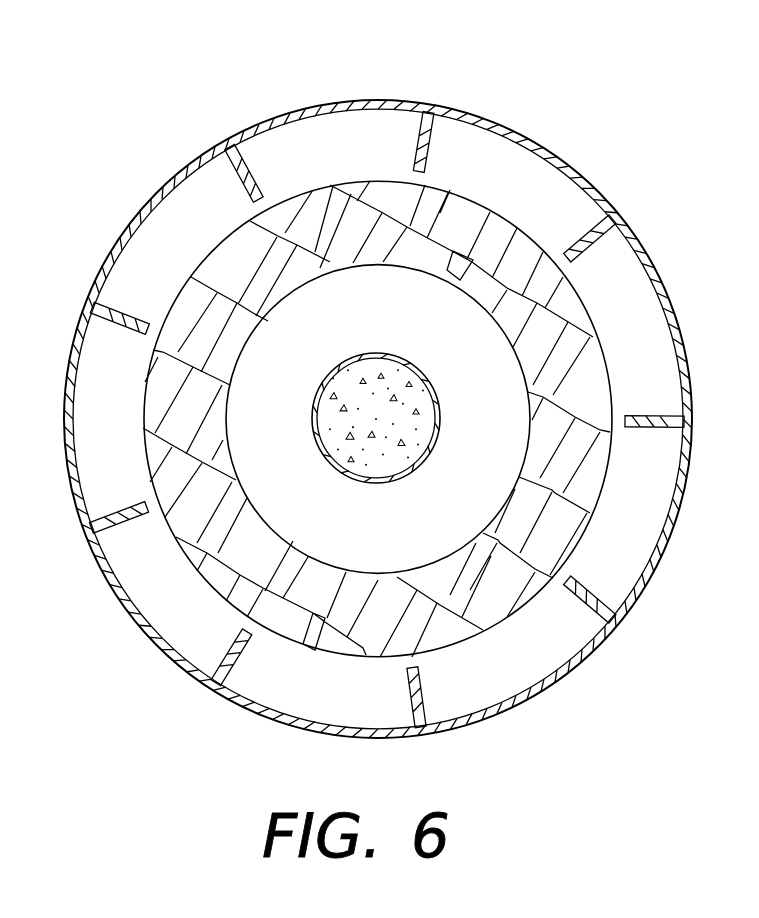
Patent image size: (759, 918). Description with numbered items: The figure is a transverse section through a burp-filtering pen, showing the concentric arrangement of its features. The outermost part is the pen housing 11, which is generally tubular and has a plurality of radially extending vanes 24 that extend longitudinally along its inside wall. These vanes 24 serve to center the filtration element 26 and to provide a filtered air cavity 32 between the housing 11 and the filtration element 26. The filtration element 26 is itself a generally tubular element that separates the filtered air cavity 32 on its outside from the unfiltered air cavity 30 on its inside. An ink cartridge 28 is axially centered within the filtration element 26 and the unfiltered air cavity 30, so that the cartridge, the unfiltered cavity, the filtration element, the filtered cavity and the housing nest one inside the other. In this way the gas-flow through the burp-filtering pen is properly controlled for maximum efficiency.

The pen housing 11 is at (569, 168).
The radially extending vanes 24 is at (415, 143).
The filtration element 26 is at (345, 603).
The ink cartridge 28 is at (385, 377).
The unfiltered air cavity 30 is at (470, 348).
The filtered air cavity 32 is at (636, 542).